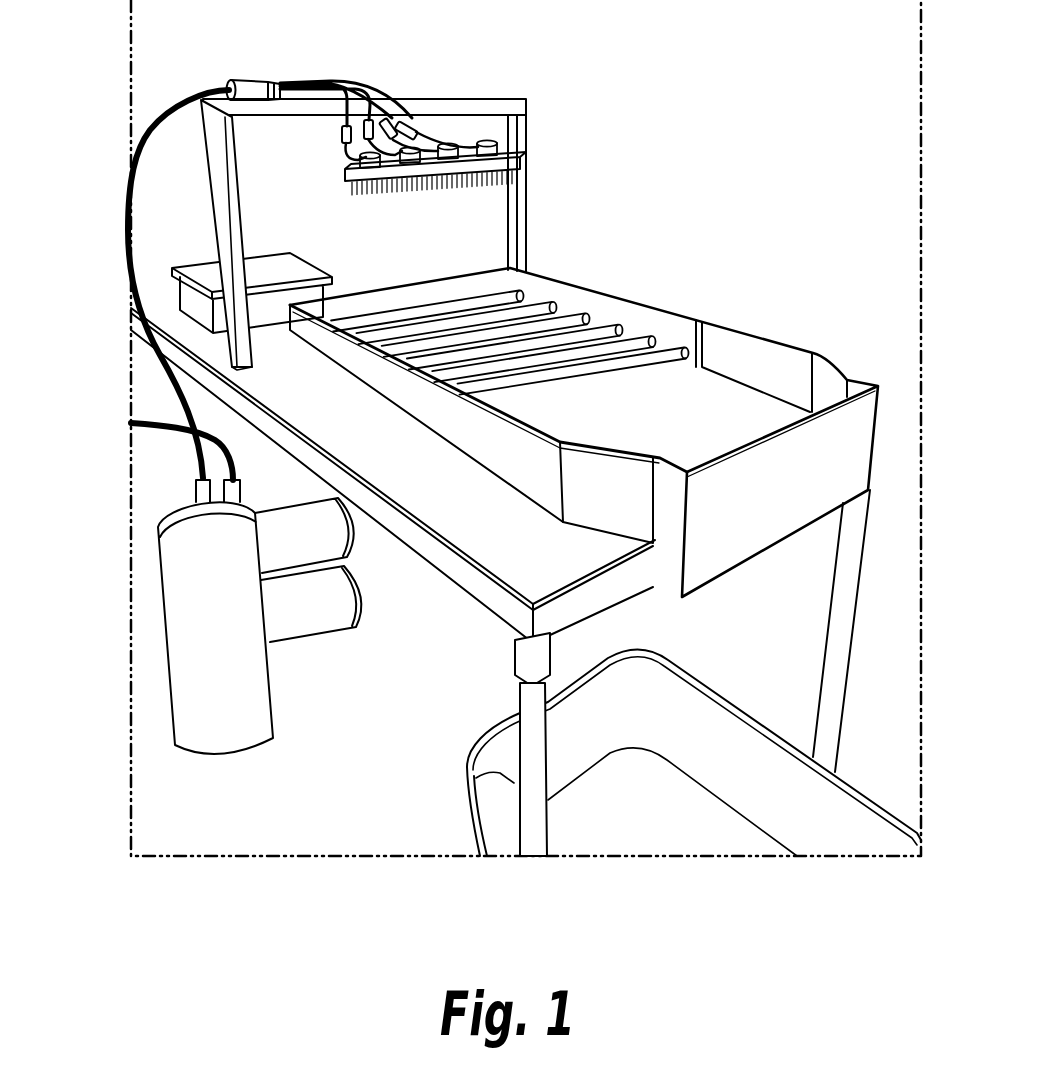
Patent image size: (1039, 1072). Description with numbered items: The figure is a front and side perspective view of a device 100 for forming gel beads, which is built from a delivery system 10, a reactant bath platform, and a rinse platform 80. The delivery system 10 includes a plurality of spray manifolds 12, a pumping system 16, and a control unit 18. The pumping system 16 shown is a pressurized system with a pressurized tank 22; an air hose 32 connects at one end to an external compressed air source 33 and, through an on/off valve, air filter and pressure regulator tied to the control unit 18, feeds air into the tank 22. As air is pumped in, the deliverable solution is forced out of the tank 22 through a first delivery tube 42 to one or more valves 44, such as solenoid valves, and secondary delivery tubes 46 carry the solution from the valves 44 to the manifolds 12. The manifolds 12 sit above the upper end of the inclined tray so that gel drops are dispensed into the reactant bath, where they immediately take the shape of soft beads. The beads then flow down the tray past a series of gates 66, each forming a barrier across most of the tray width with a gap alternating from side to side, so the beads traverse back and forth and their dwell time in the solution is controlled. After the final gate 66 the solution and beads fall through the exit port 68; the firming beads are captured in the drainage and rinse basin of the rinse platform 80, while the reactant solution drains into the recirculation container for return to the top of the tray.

The delivery system 10 is at (102, 152).
The device 100 is at (746, 41).
The spray manifolds 12 is at (375, 157).
The pumping system 16 is at (343, 708).
The control unit 18 is at (212, 270).
The pressurized tank 22 is at (215, 670).
The air hose 32 is at (155, 412).
The external compressed air source 33 is at (322, 610).
The first delivery tube 42 is at (150, 128).
The valves 44 is at (257, 84).
The secondary delivery tubes 46 is at (394, 105).
The gates 66 is at (680, 349).
The exit port 68 is at (674, 565).
The rinse platform 80 is at (820, 800).